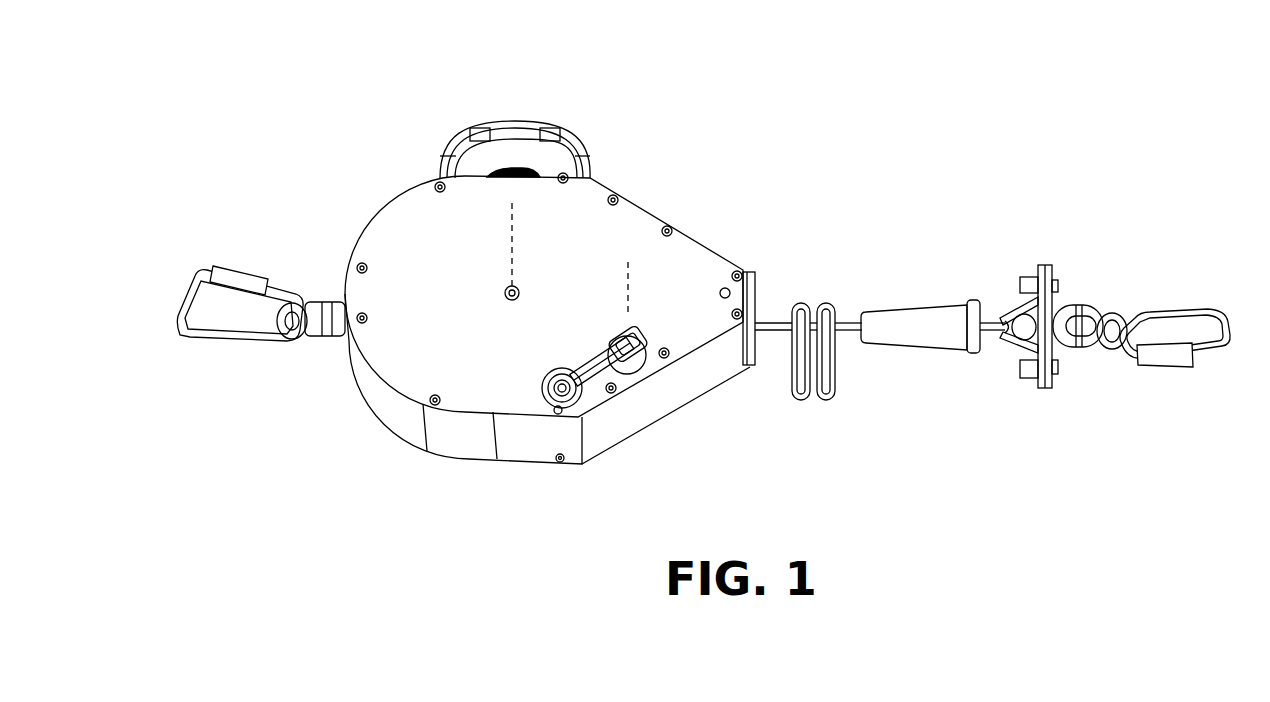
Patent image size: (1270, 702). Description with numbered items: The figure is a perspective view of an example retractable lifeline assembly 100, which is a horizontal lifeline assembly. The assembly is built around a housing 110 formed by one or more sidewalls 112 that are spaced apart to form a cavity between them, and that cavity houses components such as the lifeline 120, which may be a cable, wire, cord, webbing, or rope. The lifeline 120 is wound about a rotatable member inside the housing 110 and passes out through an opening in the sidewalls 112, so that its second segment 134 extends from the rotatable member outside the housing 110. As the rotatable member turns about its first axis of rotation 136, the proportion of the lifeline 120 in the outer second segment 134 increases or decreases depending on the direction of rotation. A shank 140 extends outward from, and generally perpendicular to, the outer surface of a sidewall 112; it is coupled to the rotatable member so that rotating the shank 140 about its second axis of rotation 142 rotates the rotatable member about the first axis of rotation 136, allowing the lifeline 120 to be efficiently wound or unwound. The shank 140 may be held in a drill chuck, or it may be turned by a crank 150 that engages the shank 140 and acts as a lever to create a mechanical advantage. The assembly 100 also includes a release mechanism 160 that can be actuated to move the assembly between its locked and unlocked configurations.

The retractable lifeline assembly 100 is at (765, 92).
The housing 110 is at (448, 480).
The sidewalls 112 is at (402, 238).
The lifeline 120 is at (855, 350).
The second segment 134 is at (767, 319).
The axis of rotation 136 is at (513, 238).
The shank 140 is at (650, 382).
The axis of rotation 142 is at (628, 297).
The crank 150 is at (593, 358).
The release mechanism 160 is at (518, 152).